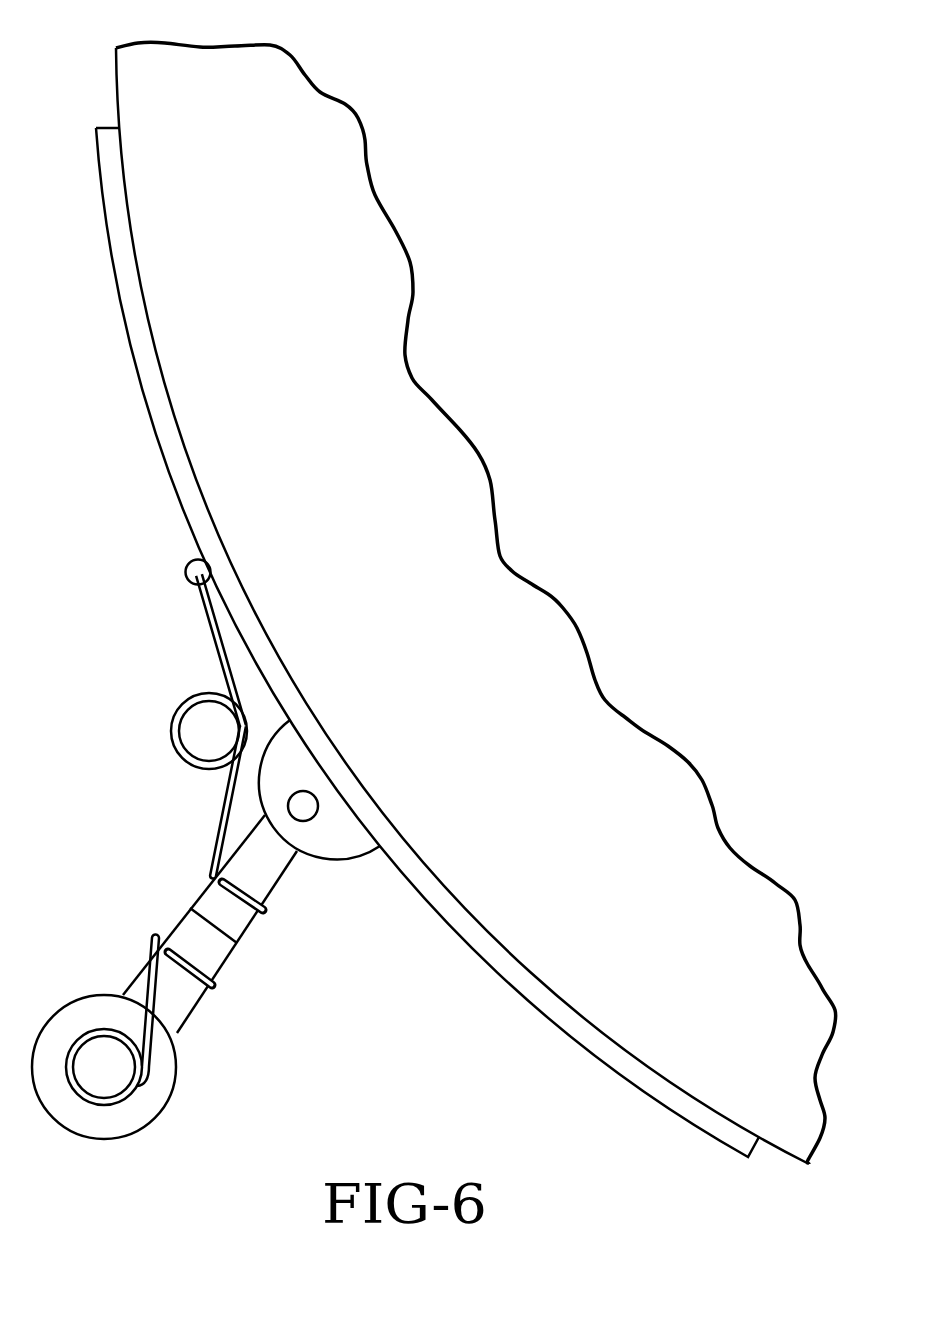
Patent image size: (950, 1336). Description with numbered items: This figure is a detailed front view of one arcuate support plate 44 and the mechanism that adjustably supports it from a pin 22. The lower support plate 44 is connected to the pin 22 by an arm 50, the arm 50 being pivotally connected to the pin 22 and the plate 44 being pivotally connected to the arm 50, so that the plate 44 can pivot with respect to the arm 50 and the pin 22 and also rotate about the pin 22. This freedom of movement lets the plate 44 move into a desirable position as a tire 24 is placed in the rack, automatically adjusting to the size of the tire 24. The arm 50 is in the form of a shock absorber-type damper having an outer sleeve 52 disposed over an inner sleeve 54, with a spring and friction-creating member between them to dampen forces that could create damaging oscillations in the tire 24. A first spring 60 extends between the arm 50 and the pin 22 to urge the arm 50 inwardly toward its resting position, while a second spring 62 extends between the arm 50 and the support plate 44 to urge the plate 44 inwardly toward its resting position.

The pin 22 is at (146, 1110).
The tire 24 is at (474, 712).
The lower support plate 44 is at (170, 445).
The arm 50 is at (226, 946).
The outer sleeve 52 is at (180, 1002).
The inner sleeve 54 is at (272, 871).
The first spring 60 is at (140, 990).
The second spring 62 is at (171, 727).